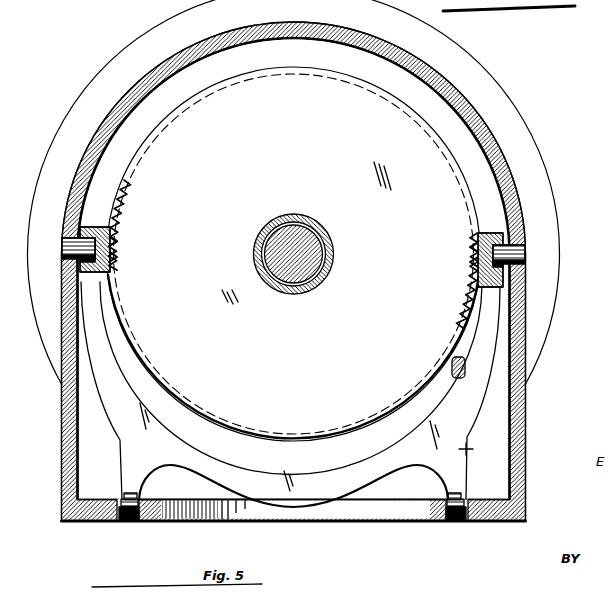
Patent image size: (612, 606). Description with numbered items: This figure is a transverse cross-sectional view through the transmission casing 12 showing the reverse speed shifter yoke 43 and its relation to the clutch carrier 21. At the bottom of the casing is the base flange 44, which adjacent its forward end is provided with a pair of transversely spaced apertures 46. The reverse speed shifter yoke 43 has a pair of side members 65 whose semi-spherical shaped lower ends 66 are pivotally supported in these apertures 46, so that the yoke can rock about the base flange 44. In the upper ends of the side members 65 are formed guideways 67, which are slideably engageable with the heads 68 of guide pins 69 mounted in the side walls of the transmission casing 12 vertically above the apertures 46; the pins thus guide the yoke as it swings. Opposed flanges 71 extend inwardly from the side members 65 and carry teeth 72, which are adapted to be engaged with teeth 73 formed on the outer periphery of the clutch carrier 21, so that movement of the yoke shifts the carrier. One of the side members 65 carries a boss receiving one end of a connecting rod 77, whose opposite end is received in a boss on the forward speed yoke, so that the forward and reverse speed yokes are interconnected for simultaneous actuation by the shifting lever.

The transmission casing 12 is at (486, 118).
The clutch carrier 21 is at (261, 106).
The reverse speed shifter yoke 43 is at (468, 450).
The base flange 44 is at (429, 517).
The apertures 46 is at (139, 520).
The side members 65 is at (103, 381).
The semi-spherical shaped lower ends 66 is at (123, 521).
The guideways 67 is at (115, 230).
The heads 68 is at (89, 245).
The guide pins 69 is at (65, 249).
The opposed flanges 71 is at (117, 240).
The teeth 72 is at (117, 257).
The teeth 73 is at (123, 187).
The connecting rod 77 is at (466, 367).